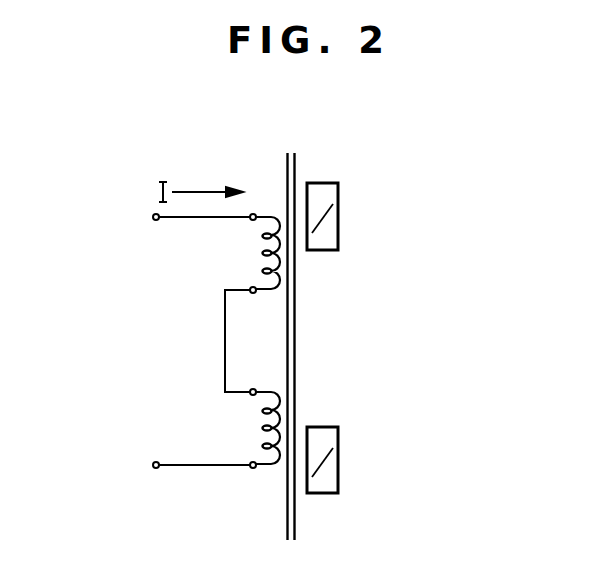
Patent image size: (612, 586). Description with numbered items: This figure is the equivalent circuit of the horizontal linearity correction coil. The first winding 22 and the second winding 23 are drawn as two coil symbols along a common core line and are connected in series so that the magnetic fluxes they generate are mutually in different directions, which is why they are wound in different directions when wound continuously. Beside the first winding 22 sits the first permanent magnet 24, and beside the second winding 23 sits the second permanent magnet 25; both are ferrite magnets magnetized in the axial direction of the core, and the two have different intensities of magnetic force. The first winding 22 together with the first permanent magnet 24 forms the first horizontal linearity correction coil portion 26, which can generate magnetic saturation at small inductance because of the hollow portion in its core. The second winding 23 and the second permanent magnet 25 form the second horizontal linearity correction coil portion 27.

The first winding 22 is at (258, 257).
The second winding 23 is at (258, 424).
The first permanent magnet 24 is at (338, 217).
The second permanent magnet 25 is at (338, 465).
The first horizontal linearity correction coil portion 26 is at (336, 282).
The second horizontal linearity correction coil portion 27 is at (403, 398).